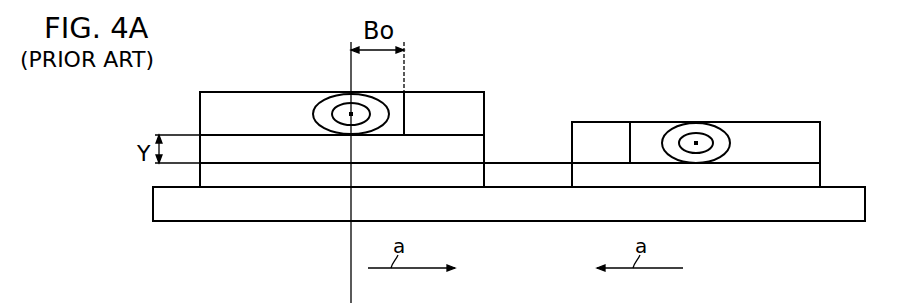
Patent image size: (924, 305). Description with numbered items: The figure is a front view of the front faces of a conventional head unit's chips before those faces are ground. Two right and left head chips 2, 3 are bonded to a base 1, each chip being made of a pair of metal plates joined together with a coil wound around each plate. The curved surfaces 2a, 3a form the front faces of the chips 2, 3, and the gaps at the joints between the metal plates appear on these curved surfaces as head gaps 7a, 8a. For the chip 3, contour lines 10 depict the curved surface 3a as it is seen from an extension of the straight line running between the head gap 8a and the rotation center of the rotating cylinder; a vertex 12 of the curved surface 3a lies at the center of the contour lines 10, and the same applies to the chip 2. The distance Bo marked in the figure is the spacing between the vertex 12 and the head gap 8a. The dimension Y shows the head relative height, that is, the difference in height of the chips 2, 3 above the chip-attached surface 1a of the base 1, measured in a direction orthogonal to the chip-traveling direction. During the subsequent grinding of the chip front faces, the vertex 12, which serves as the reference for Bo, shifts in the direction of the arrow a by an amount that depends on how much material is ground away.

The base 1 is at (790, 213).
The chip-attached surface 1a is at (163, 203).
The head chip 2 is at (776, 122).
The curved surface 2a is at (650, 128).
The head chip 3 is at (462, 92).
The curved surface 3a is at (221, 100).
The head gap 7a is at (630, 145).
The head gap 8a is at (405, 118).
The contour lines 10 is at (316, 110).
The vertex 12 is at (349, 112).